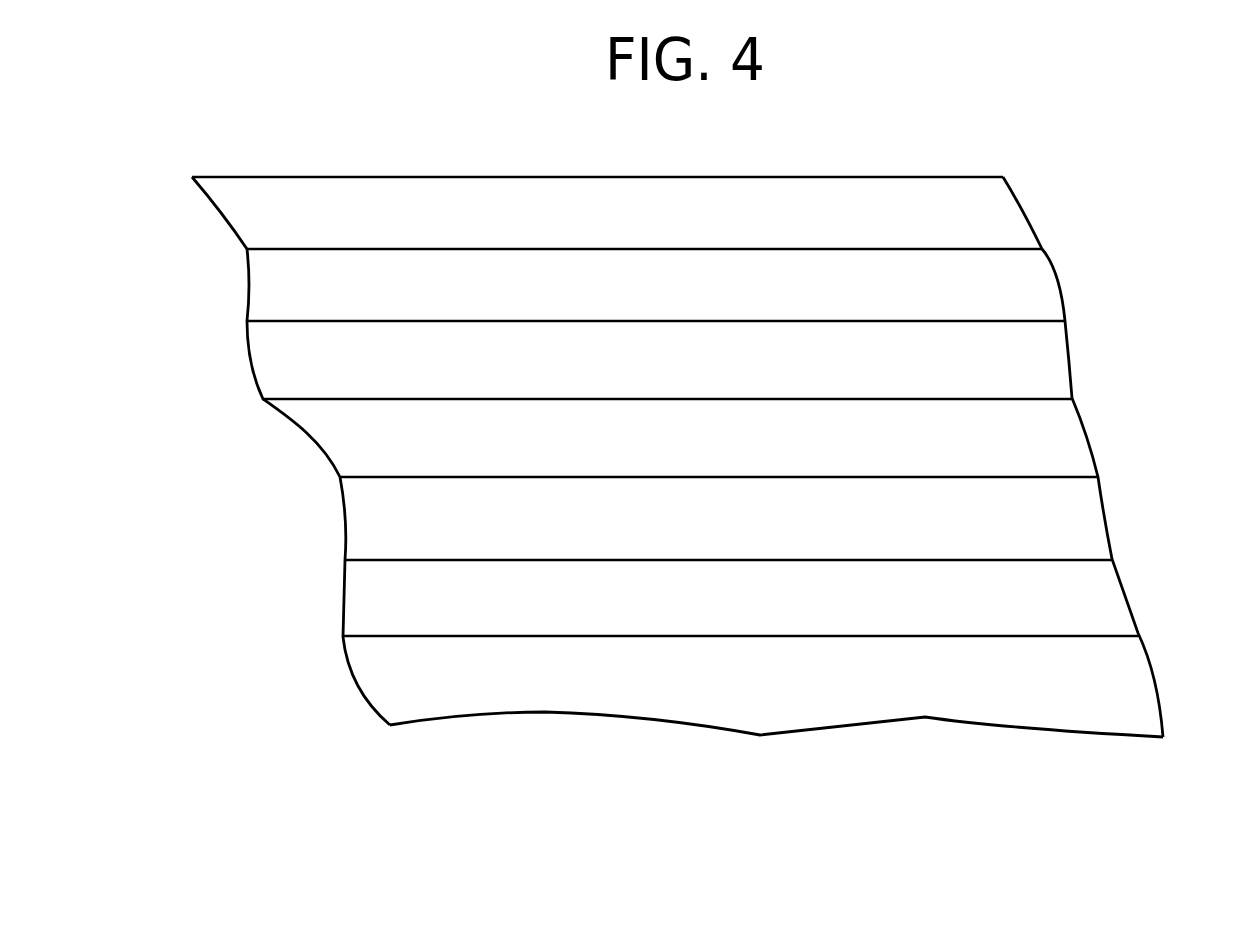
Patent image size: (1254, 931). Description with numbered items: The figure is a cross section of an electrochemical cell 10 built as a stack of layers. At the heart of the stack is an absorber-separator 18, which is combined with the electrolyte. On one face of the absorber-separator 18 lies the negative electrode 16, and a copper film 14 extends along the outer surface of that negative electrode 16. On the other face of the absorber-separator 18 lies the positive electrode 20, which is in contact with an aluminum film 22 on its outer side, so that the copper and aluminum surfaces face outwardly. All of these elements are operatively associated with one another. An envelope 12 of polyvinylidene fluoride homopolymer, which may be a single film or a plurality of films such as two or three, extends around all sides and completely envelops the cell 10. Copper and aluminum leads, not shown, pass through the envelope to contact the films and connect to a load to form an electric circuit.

The cell 10 is at (435, 787).
The envelope 12 is at (702, 225).
The copper film 14 is at (702, 300).
The negative electrode 16 is at (702, 373).
The absorber-separator 18 is at (702, 448).
The positive electrode 20 is at (702, 528).
The aluminum film 22 is at (702, 602).